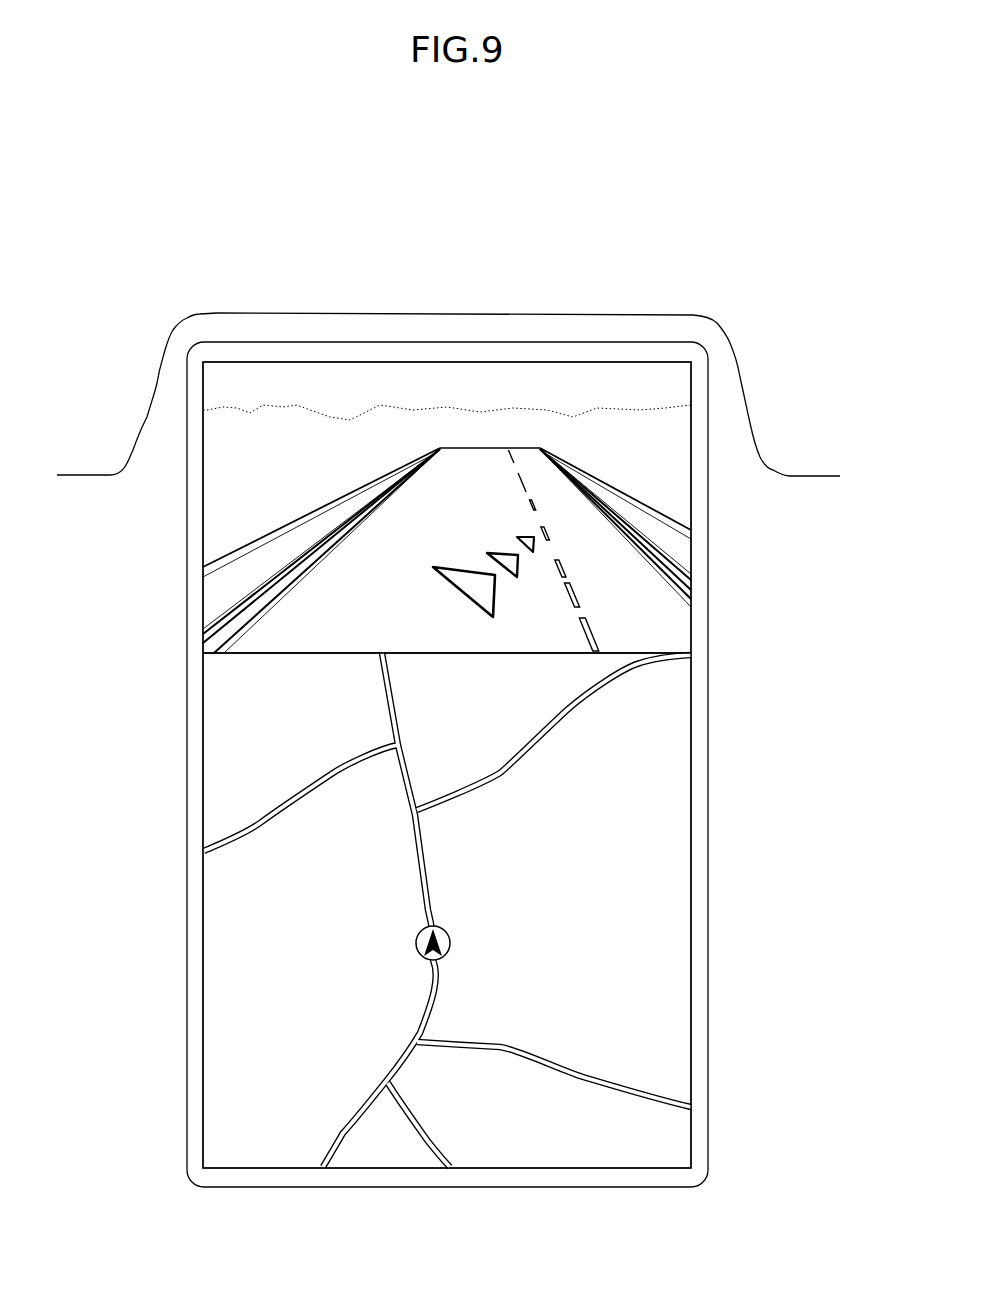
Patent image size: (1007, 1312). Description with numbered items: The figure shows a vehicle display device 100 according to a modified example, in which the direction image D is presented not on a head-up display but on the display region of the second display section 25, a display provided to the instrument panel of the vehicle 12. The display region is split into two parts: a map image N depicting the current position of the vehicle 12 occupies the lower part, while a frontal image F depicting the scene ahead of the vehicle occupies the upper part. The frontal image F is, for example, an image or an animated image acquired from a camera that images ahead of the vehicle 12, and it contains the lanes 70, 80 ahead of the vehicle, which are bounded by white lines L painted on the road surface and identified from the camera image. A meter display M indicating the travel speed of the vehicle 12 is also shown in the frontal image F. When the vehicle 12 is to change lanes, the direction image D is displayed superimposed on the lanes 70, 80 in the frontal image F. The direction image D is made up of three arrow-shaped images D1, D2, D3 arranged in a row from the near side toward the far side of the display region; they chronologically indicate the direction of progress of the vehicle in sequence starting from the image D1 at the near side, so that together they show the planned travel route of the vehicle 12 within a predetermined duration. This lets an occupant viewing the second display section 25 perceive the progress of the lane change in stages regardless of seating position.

The vehicle 12 is at (190, 250).
The vehicle display device 100 is at (159, 318).
The second display section 25 is at (489, 340).
The frontal image F is at (359, 388).
The lane 70 is at (482, 455).
The lane 80 is at (522, 458).
The direction image D is at (427, 498).
The white line L is at (272, 607).
The meter display M is at (392, 605).
The map image N is at (658, 846).
The arrow-shaped image D1 is at (460, 567).
The arrow-shaped image D2 is at (500, 552).
The arrow-shaped image D3 is at (528, 540).